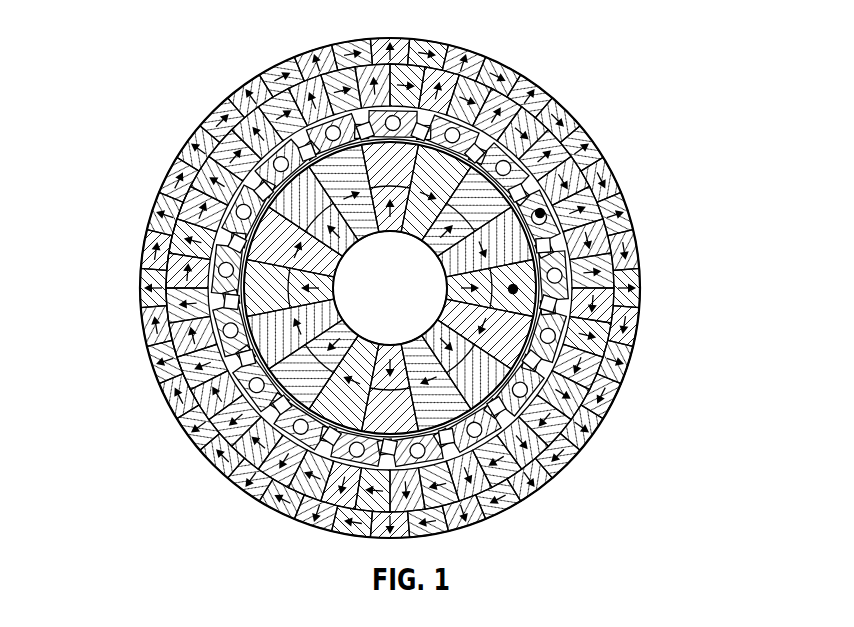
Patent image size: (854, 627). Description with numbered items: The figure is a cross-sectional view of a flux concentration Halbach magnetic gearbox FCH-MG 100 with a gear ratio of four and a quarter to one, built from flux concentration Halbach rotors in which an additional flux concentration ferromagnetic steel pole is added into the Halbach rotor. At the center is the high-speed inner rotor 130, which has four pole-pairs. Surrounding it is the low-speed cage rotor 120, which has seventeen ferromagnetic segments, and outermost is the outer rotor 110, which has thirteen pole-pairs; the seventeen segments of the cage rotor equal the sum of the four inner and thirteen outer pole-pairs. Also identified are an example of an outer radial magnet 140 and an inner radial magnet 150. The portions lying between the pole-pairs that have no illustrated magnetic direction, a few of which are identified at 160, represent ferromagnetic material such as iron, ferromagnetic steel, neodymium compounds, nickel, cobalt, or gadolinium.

The flux concentration Halbach magnetic gearbox 100 is at (124, 64).
The outer rotor 110 is at (548, 106).
The low-speed cage rotor 120 is at (552, 203).
The high-speed inner rotor 130 is at (562, 346).
The outer radial magnet 140 is at (630, 367).
The inner radial magnet 150 is at (572, 446).
The ferromagnetic material portions 160 is at (205, 228).